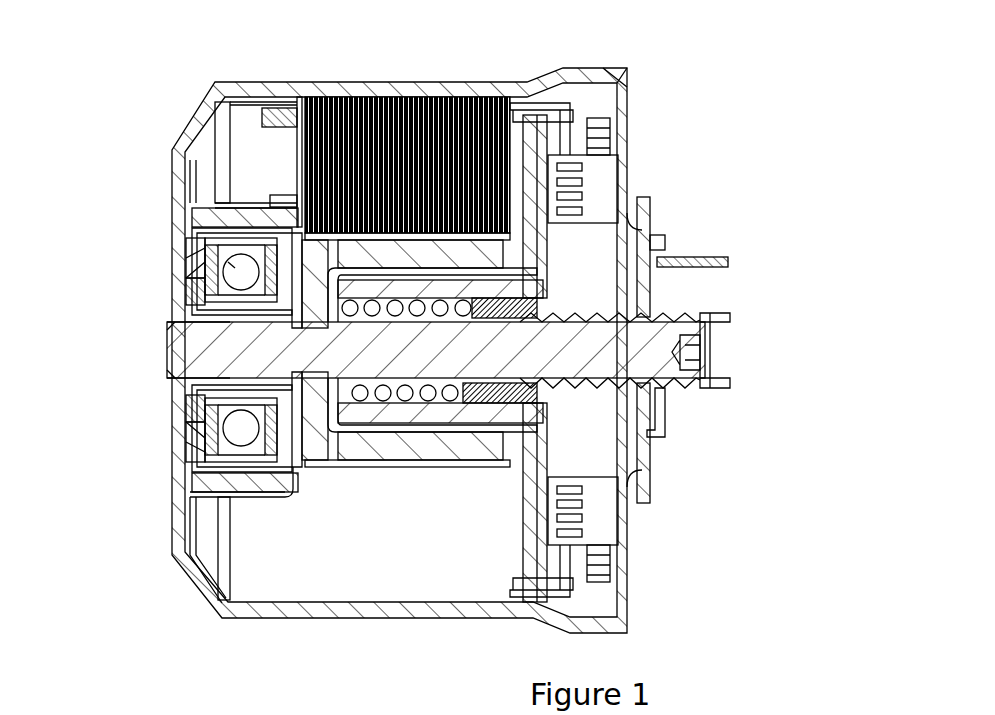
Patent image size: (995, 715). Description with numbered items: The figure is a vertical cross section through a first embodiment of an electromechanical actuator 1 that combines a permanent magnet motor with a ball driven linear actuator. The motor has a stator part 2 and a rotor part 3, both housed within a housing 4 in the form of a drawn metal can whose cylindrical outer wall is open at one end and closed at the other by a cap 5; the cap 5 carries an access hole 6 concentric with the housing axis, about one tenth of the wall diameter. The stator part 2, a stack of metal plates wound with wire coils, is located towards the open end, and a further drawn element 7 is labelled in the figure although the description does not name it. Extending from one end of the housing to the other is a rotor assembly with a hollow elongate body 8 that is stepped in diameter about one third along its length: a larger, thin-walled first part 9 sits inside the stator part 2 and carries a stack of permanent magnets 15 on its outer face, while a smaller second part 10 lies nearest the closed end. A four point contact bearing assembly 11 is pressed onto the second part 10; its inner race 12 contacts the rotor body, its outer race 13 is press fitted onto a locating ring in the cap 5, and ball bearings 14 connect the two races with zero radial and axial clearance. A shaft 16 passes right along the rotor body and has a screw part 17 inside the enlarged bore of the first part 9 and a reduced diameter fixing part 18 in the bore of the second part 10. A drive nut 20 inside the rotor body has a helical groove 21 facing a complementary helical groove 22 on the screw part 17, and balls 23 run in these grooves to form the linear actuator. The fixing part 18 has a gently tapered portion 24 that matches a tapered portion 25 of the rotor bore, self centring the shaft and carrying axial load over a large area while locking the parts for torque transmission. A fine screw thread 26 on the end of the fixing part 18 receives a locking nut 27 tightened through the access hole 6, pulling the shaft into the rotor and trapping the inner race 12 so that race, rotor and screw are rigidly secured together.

The electromechanical actuator 1 is at (503, 64).
The stator part 2 is at (545, 80).
The rotor part 3 is at (487, 467).
The housing 4 is at (240, 82).
The cap 5 is at (172, 198).
The access hole 6 is at (177, 303).
The housing wall 7 is at (345, 97).
The hollow elongate body 8 is at (583, 153).
The first part 9 is at (437, 97).
The second part 10 is at (258, 440).
The four point contact bearing assembly 11 is at (222, 477).
The inner race 12 is at (172, 340).
The outer race 13 is at (200, 226).
The ball bearings 14 is at (222, 270).
The permanent magnets 15 is at (583, 217).
The shaft 16 is at (668, 282).
The screw part 17 is at (620, 392).
The fixing part 18 is at (173, 427).
The drive nut 20 is at (648, 215).
The helical groove 21 is at (445, 400).
The helical groove 22 is at (425, 400).
The balls 23 is at (360, 440).
The tapered portion 24 is at (200, 455).
The tapered portion 25 is at (173, 375).
The fine screw thread 26 is at (173, 397).
The locking nut 27 is at (187, 313).